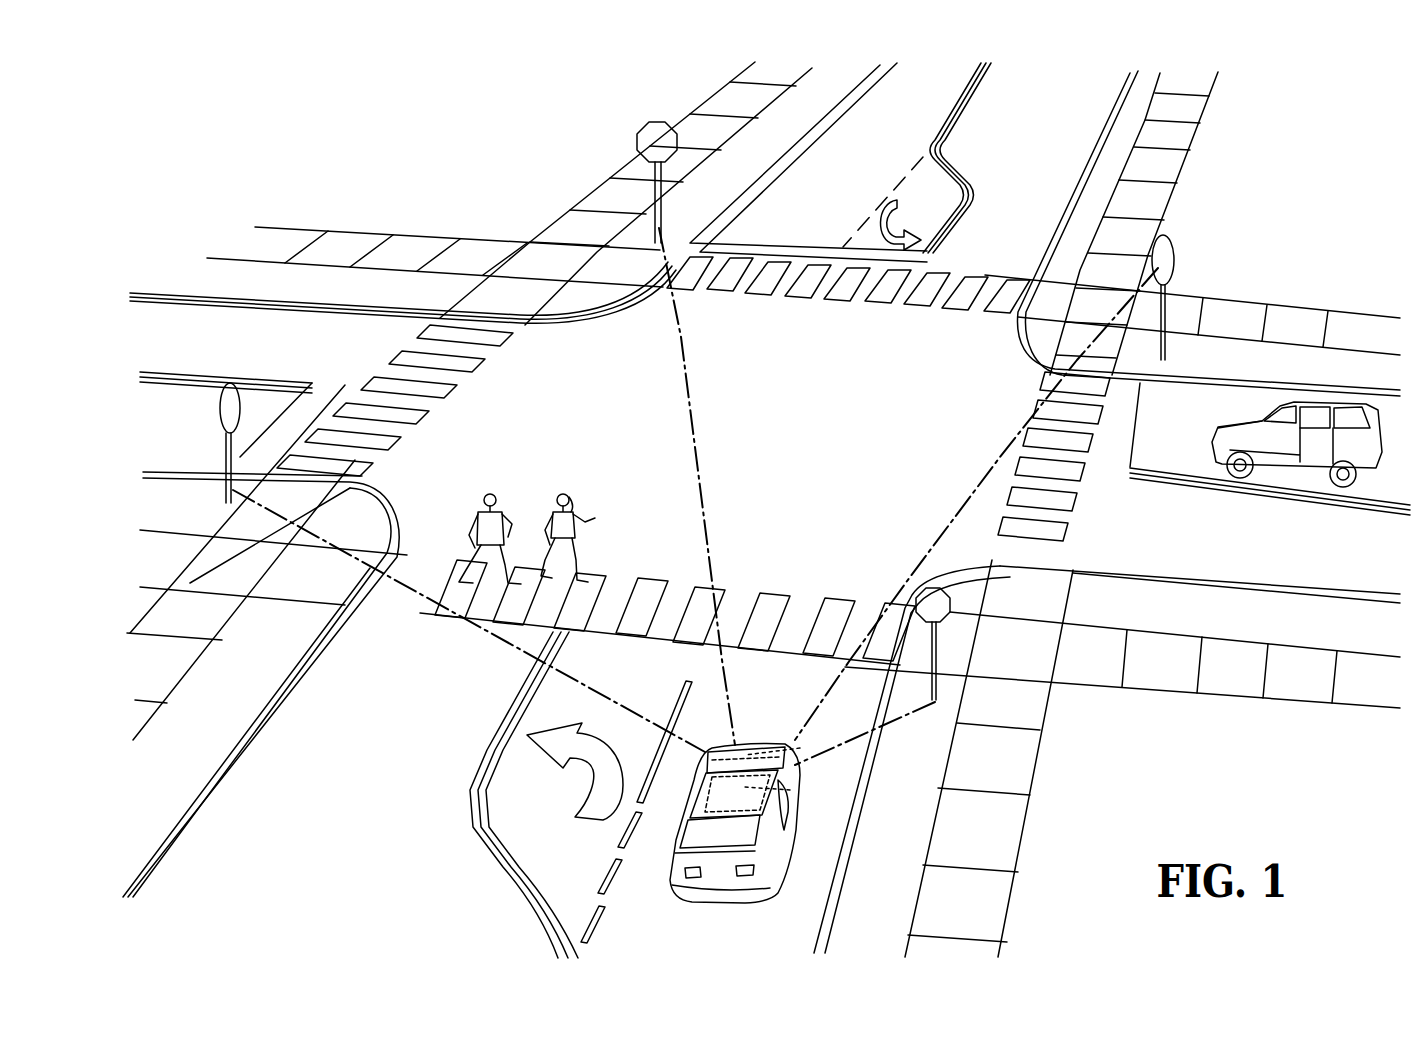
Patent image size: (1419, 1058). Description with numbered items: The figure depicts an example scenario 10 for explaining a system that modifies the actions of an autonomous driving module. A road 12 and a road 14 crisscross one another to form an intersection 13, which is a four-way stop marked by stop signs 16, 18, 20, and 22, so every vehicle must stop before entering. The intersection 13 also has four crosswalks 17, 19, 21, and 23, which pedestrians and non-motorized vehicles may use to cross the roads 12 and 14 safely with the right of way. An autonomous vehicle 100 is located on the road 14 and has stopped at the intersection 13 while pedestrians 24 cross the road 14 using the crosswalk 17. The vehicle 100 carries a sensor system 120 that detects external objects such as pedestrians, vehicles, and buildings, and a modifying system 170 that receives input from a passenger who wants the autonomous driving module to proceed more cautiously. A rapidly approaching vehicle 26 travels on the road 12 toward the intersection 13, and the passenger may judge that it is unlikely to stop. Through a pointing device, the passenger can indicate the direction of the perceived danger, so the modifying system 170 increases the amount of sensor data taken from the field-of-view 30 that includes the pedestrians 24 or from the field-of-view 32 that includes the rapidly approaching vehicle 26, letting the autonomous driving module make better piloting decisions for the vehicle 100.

The scenario 10 is at (413, 110).
The road 12 is at (262, 333).
The intersection 13 is at (607, 407).
The road 14 is at (297, 838).
The stop sign 16 is at (952, 613).
The crosswalk 17 is at (320, 648).
The stop sign 18 is at (1170, 238).
The crosswalk 19 is at (1173, 368).
The stop sign 20 is at (656, 124).
The crosswalk 21 is at (973, 287).
The stop sign 22 is at (223, 383).
The crosswalk 23 is at (453, 355).
The pedestrians 24 is at (470, 495).
The rapidly approaching vehicle 26 is at (1322, 397).
The field-of-view 30 is at (647, 690).
The field-of-view 32 is at (752, 718).
The vehicle 100 is at (673, 887).
The sensor system 120 is at (800, 748).
The modifying system 170 is at (790, 790).